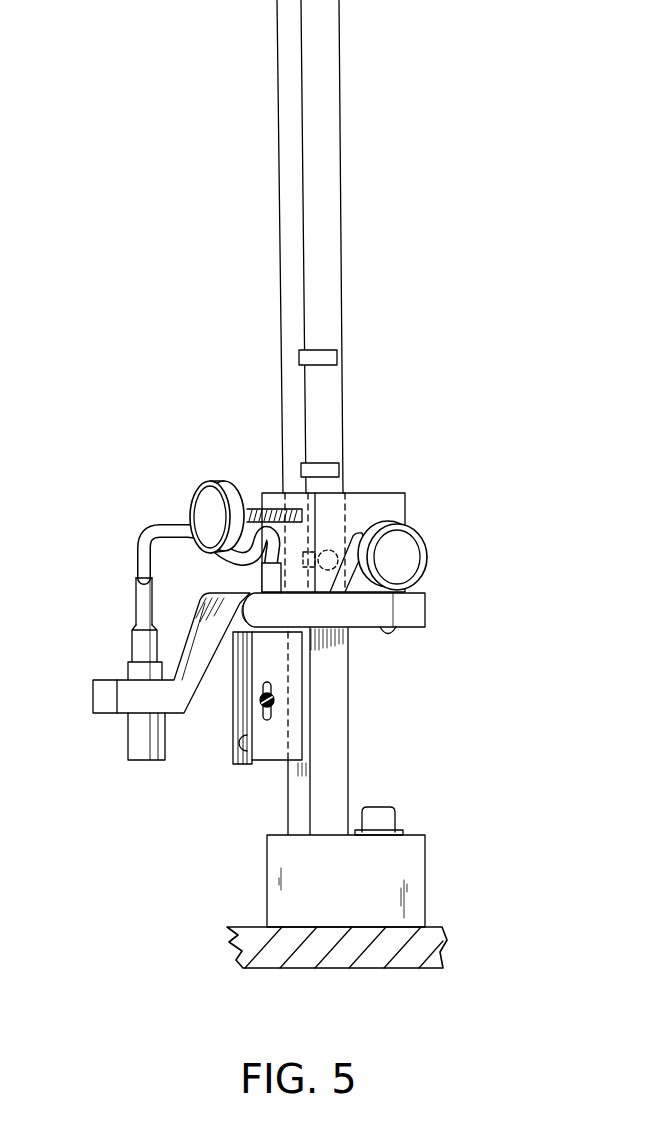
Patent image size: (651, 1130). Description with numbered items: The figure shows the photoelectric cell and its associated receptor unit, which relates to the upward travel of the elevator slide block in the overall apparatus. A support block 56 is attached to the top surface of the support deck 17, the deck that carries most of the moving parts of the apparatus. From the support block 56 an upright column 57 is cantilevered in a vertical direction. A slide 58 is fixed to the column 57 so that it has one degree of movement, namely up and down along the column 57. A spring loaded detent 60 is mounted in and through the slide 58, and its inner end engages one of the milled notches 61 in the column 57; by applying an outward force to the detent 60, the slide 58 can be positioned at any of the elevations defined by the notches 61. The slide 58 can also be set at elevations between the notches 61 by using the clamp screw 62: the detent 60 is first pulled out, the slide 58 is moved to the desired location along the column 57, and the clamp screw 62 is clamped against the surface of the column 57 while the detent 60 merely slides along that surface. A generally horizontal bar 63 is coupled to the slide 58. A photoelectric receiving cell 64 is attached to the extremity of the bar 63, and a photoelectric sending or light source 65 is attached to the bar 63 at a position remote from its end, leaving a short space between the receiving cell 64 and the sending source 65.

The support deck 17 is at (255, 927).
The support block 56 is at (426, 874).
The upright column 57 is at (349, 738).
The slide 58 is at (407, 516).
The spring loaded detent 60 is at (426, 561).
The milled notches 61 is at (333, 356).
The clamp screw 62 is at (197, 487).
The horizontal bar 63 is at (406, 629).
The photoelectric receiving cell 64 is at (128, 748).
The photoelectric sending or light source 65 is at (230, 756).